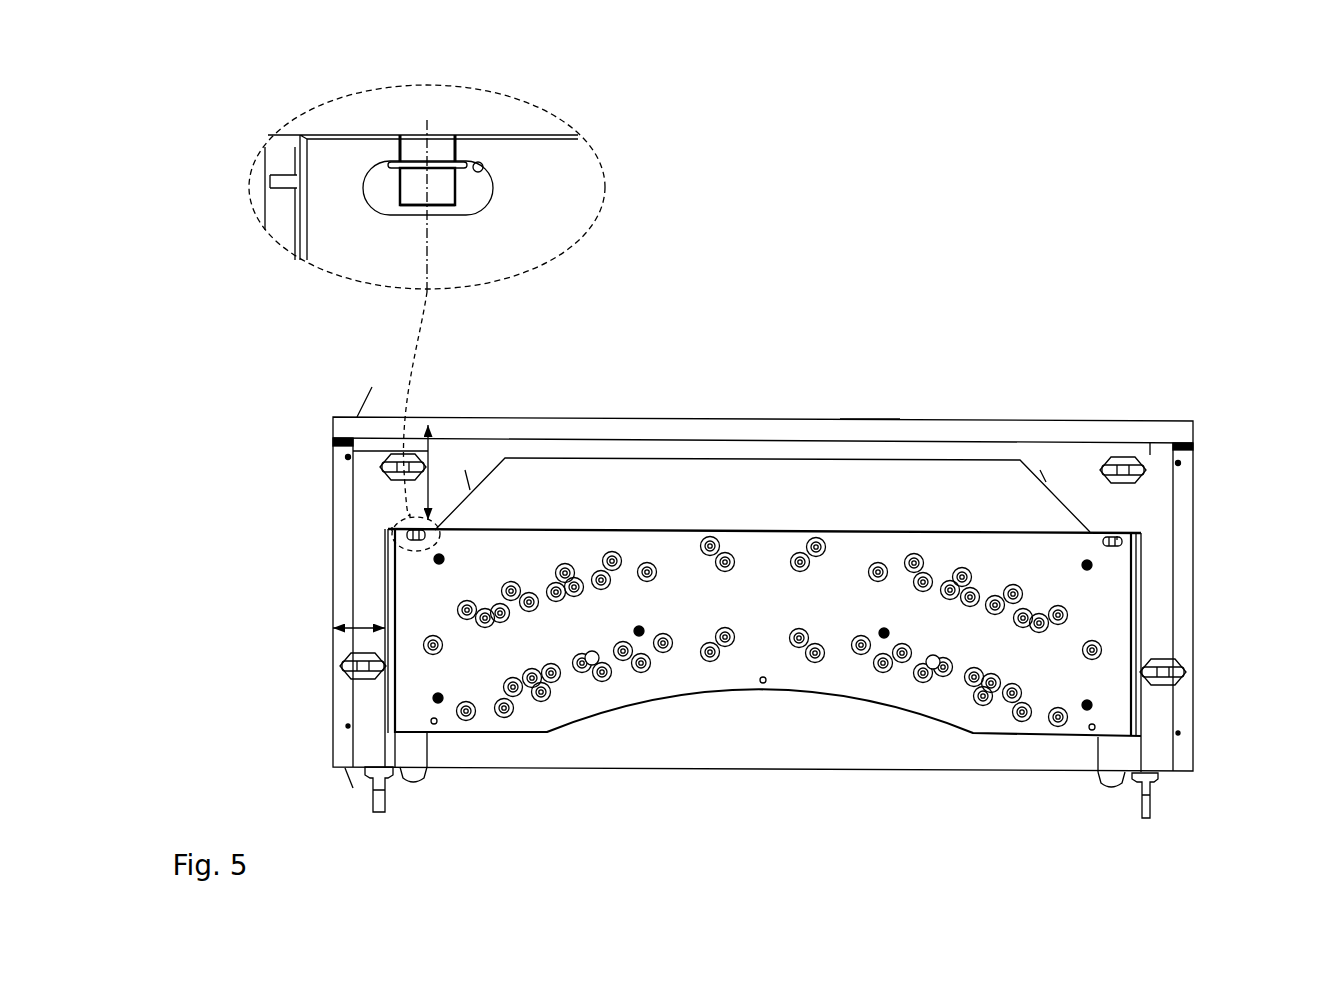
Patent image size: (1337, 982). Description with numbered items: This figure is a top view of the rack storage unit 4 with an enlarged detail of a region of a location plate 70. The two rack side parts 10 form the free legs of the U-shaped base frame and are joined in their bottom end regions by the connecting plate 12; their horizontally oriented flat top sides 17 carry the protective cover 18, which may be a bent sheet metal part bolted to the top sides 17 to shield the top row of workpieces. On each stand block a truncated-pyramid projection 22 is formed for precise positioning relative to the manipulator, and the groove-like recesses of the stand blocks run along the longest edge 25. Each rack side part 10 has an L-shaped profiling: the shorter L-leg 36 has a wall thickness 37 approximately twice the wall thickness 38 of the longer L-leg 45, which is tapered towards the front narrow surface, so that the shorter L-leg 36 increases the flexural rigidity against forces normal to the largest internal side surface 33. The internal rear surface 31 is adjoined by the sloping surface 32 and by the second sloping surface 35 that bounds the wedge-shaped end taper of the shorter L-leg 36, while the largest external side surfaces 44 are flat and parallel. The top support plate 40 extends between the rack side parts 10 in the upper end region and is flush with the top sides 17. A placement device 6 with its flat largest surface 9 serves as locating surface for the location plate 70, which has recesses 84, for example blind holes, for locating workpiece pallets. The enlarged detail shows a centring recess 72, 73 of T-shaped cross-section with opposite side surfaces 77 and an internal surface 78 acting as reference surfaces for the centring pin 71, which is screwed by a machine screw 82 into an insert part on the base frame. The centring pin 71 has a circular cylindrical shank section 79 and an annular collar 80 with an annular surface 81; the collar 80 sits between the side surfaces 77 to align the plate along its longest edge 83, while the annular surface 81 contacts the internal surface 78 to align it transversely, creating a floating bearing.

The rack storage unit 4 is at (1140, 352).
The placement device 6 is at (667, 712).
The flat largest surface 9 is at (785, 705).
The rack side part 10 is at (1157, 580).
The connecting plate 12 is at (723, 755).
The top side 17 is at (1158, 459).
The protective cover 18 is at (865, 428).
The projection 22 is at (413, 782).
The longest edge 25 is at (1195, 477).
The internal rear surface 31 is at (1117, 538).
The sloping surface 32 is at (1097, 753).
The largest internal side surface 33 is at (1143, 745).
The second sloping surface 35 is at (472, 483).
The shorter L-leg 36 is at (452, 455).
The wall thickness 37 is at (355, 451).
The wall thickness 38 is at (358, 623).
The top support plate 40 is at (686, 450).
The largest external side surface 44 is at (1197, 601).
The longer L-leg 45 is at (1182, 705).
The location plate 70 is at (898, 690).
The centring pin 71 is at (1108, 533).
The centring recess 72 is at (390, 533).
The centring recess 73 is at (1124, 543).
The side surfaces 77 is at (407, 160).
The internal surface 78 is at (489, 170).
The shank section 79 is at (428, 148).
The annular collar 80 is at (418, 165).
The annular surface 81 is at (395, 160).
The machine screw 82 is at (456, 186).
The longest edge 83 is at (556, 137).
The recess 84 is at (728, 558).